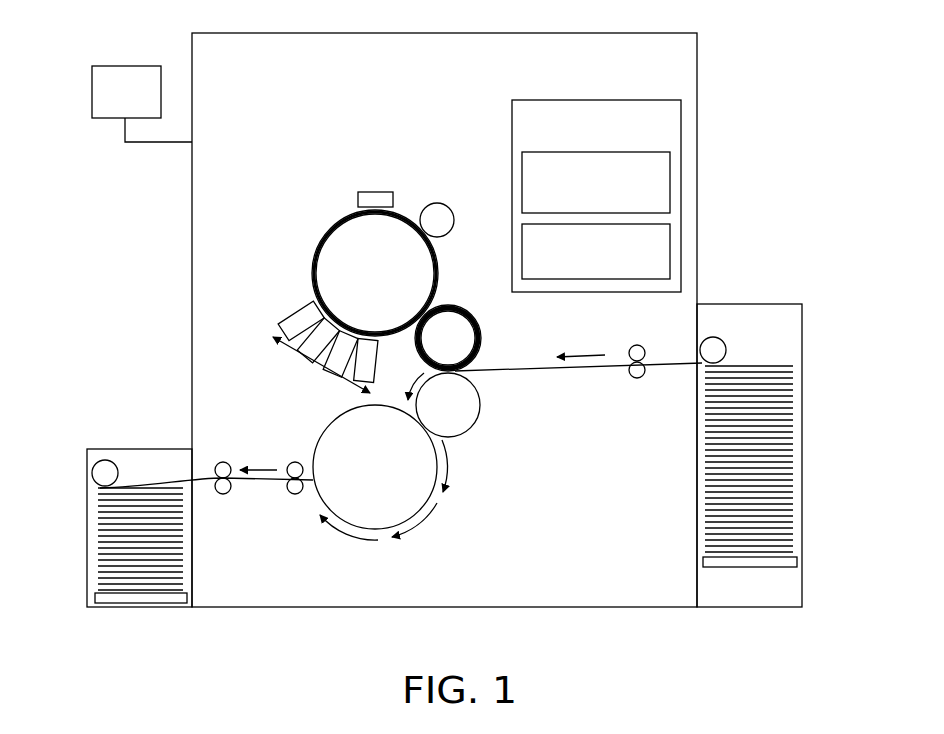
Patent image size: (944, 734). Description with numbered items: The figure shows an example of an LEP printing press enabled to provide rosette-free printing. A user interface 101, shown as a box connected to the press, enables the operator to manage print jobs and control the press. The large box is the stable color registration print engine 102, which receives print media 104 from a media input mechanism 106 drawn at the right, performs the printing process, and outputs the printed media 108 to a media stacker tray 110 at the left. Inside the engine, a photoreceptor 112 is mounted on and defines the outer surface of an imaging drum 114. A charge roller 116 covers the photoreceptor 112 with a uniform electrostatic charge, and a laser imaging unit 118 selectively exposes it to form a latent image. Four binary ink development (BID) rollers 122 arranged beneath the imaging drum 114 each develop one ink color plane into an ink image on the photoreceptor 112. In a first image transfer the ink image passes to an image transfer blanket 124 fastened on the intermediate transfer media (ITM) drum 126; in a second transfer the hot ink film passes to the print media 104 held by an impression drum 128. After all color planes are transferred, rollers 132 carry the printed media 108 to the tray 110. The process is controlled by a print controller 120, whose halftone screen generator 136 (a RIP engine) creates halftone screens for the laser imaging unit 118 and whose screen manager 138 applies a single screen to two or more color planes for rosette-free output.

The user interface 101 is at (142, 104).
The print engine 102 is at (444, 320).
The print media 104 is at (820, 364).
The media input mechanism 106 is at (783, 304).
The printed media 108 is at (77, 489).
The media stacker tray 110 is at (112, 449).
The photoreceptor 112 is at (348, 273).
The imaging drum 114 is at (375, 273).
The charge roller 116 is at (432, 204).
The laser imaging unit 118 is at (362, 192).
The print controller 120 is at (596, 196).
The binary ink development (BID) roller 122 is at (321, 366).
The image transfer blanket 124 is at (473, 338).
The intermediate transfer media (ITM) drum 126 is at (497, 356).
The impression drum 128 is at (444, 405).
The rollers 132 is at (272, 528).
The halftone screen generator 136 is at (596, 182).
The screen manager 138 is at (596, 251).